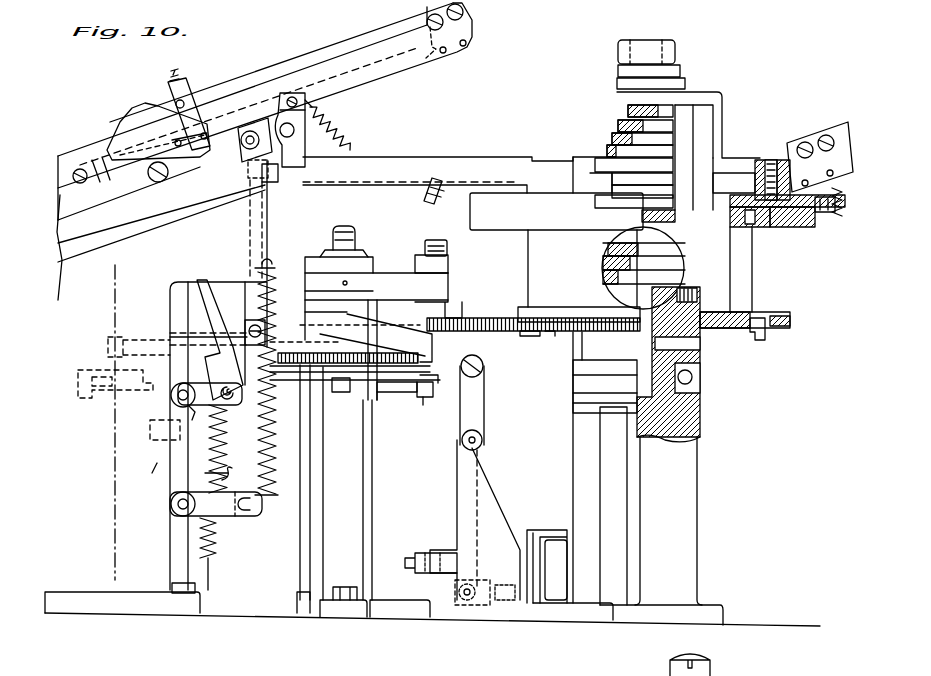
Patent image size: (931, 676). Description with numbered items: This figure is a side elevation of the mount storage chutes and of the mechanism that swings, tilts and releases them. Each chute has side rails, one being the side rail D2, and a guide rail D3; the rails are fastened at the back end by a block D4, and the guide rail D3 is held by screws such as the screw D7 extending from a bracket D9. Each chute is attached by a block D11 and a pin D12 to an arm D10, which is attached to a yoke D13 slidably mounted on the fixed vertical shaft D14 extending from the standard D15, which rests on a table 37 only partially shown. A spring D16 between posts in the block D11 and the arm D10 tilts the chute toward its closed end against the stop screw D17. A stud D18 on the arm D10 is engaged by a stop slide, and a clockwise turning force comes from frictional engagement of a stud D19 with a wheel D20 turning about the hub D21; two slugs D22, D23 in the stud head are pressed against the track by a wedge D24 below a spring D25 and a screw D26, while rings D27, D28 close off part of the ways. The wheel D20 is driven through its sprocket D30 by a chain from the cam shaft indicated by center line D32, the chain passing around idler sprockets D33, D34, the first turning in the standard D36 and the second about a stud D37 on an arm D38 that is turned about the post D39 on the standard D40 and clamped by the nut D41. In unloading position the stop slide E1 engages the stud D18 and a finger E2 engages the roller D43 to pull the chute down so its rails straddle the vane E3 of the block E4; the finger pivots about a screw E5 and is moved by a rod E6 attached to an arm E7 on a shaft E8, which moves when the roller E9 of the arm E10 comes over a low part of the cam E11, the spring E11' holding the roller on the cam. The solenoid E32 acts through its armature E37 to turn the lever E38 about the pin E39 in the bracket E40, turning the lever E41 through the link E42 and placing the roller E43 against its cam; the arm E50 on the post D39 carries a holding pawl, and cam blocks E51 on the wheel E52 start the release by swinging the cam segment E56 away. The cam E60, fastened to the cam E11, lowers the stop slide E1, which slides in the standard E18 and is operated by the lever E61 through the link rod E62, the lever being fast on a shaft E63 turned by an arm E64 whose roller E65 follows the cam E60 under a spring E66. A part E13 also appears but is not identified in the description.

The side rail D2 is at (378, 73).
The guide rail D3 is at (338, 48).
The block D4 is at (467, 15).
The screw D7 is at (174, 76).
The bracket D9 is at (185, 90).
The arm D10 is at (367, 187).
The block D11 is at (310, 107).
The pin D12 is at (303, 133).
The yoke D13 is at (587, 157).
The fixed vertical shaft D14 is at (650, 40).
The standard D15 is at (698, 542).
The spring D16 is at (348, 147).
The stop screw D17 is at (428, 198).
The stud D18 is at (262, 172).
The stud D19 is at (763, 167).
The wheel D20 is at (532, 252).
The hub D21 is at (697, 335).
The slug D22 is at (762, 227).
The slug D23 is at (785, 228).
The wedge D24 is at (768, 198).
The spring D25 is at (776, 178).
The screw D26 is at (772, 160).
The ring D27 is at (730, 207).
The ring D28 is at (818, 212).
The sprocket D30 is at (515, 332).
The center line D32 is at (115, 537).
The idler sprocket D33 is at (313, 314).
The idler sprocket D34 is at (467, 318).
The standard D36 is at (372, 513).
The stud D37 is at (432, 257).
The arm D38 is at (452, 287).
The post D39 is at (352, 243).
The standard D40 is at (303, 547).
The nut D41 is at (372, 260).
The roller D43 is at (255, 162).
The stop slide E1 is at (257, 197).
The finger E2 is at (247, 140).
The vane E3 is at (106, 147).
The block E4 is at (156, 228).
The screw E5 is at (159, 176).
The rod E6 is at (207, 290).
The arm E7 is at (208, 387).
The shaft E8 is at (171, 393).
The roller E9 is at (208, 430).
The arm E10 is at (192, 413).
The cam E11 is at (149, 435).
The spring E11' is at (210, 555).
The screw E13 is at (98, 178).
The standard E18 is at (168, 315).
The solenoid E32 is at (548, 540).
The armature E37 is at (508, 607).
The lever E38 is at (487, 407).
The pin E39 is at (487, 440).
The bracket E40 is at (498, 490).
The lever E41 is at (228, 333).
The link E42 is at (460, 358).
The roller E43 is at (108, 347).
The arm E50 is at (432, 338).
The cam blocks E51 is at (390, 393).
The wheel E52 is at (423, 383).
The cam segment E56 is at (85, 398).
The cam E60 is at (146, 479).
The lever E61 is at (230, 516).
The link rod E62 is at (228, 473).
The shaft E63 is at (182, 510).
The arm E64 is at (262, 472).
The roller E65 is at (222, 478).
The spring E66 is at (256, 491).
The table 37 is at (762, 627).